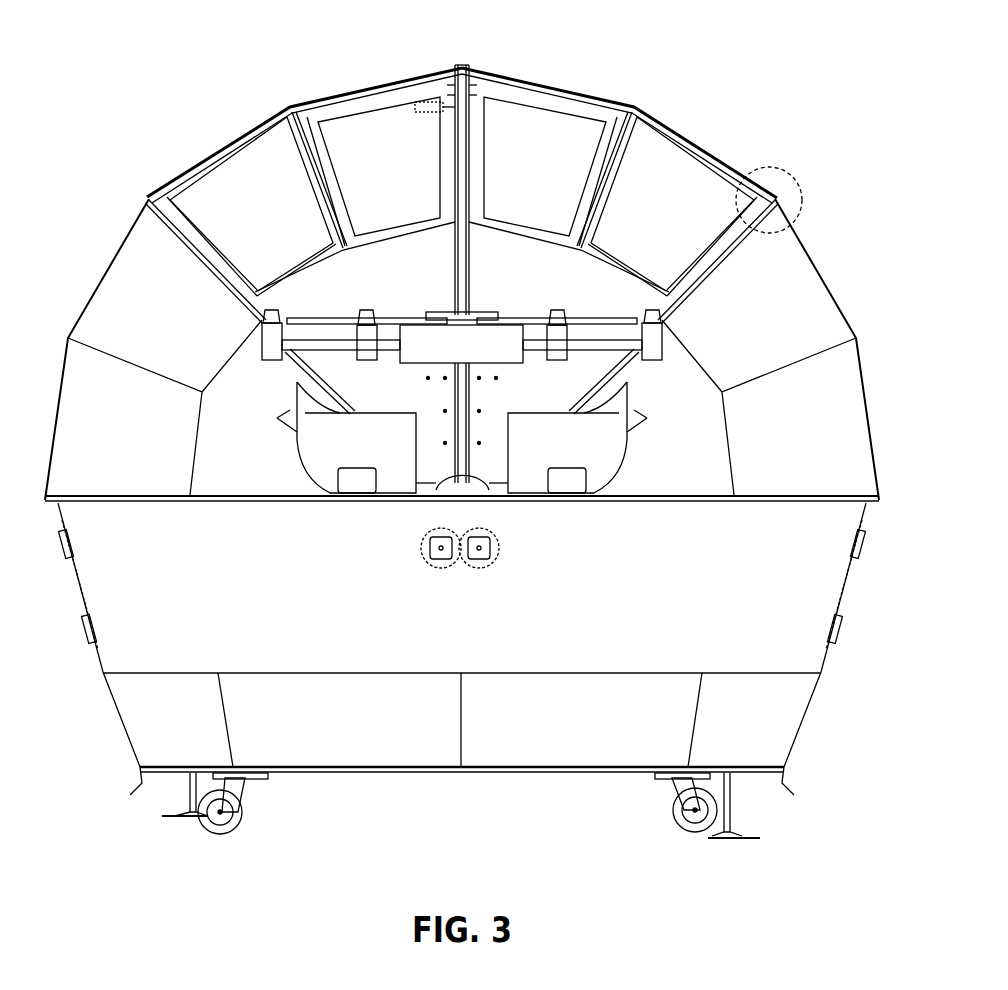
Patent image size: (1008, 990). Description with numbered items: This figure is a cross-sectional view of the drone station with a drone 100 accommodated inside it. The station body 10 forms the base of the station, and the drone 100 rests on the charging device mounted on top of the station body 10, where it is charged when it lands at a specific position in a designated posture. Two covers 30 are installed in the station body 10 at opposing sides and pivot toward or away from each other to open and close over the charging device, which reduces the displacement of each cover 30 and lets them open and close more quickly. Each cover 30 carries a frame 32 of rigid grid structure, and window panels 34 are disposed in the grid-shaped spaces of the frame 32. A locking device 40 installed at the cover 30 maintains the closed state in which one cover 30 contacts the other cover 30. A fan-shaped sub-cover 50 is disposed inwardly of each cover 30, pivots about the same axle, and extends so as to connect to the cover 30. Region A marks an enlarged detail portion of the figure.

The station body 10 is at (742, 647).
The cover 30 is at (206, 140).
The frame 32 is at (306, 178).
The window panel 34 is at (238, 205).
The locking device 40 is at (443, 100).
The sub-cover 50 is at (107, 265).
The drone 100 is at (425, 372).
The detail region A is at (799, 180).